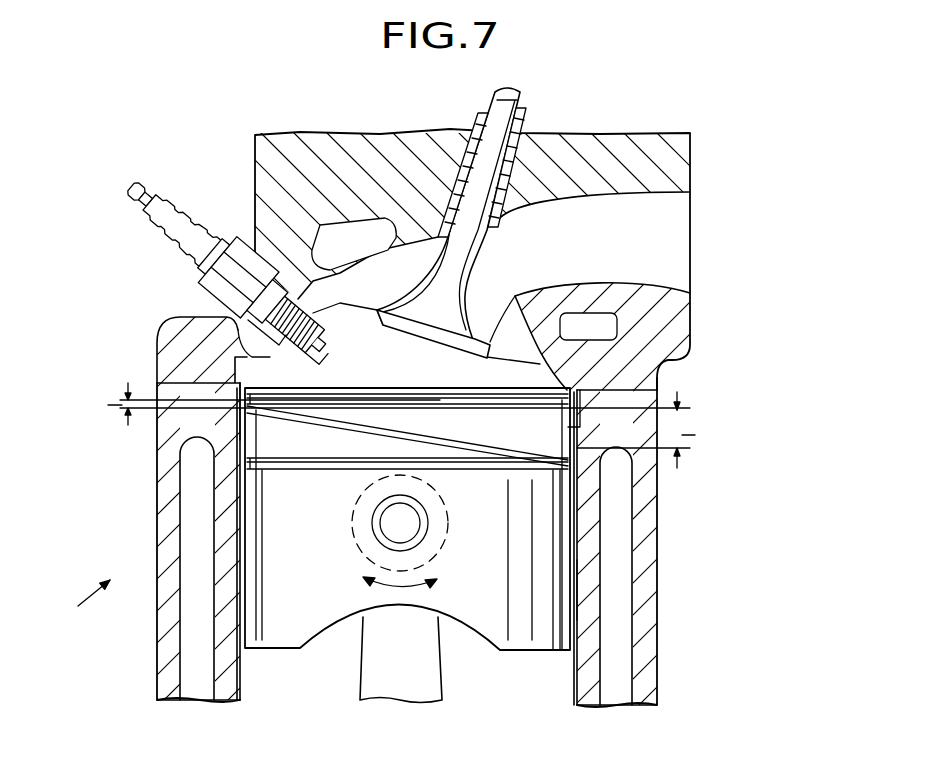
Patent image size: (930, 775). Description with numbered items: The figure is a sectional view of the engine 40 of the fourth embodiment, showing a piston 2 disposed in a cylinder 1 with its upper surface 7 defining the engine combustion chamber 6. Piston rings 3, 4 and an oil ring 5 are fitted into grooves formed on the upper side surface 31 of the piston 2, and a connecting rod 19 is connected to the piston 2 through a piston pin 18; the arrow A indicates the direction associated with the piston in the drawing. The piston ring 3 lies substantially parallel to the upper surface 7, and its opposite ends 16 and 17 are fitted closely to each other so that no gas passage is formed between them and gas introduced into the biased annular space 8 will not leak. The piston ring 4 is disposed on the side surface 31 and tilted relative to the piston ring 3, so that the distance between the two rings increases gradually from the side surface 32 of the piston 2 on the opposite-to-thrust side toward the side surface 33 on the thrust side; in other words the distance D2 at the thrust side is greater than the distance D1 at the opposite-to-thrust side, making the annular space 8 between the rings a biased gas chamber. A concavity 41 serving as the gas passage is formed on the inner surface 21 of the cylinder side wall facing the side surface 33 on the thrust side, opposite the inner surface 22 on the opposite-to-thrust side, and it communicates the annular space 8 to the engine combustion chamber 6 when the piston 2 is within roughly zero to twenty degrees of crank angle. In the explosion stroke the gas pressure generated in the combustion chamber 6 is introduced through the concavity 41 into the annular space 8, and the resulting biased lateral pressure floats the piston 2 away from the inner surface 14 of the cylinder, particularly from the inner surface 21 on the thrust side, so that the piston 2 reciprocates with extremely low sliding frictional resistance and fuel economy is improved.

The cylinder 1 is at (160, 605).
The piston 2 is at (238, 522).
The piston ring 3 is at (177, 337).
The piston ring 4 is at (175, 430).
The oil ring 5 is at (240, 478).
The engine combustion chamber 6 is at (512, 360).
The upper surface 7 is at (353, 390).
The annular space 8 is at (665, 398).
The inner surface of the cylinder 14 is at (577, 690).
The end of the piston ring 16 is at (412, 398).
The end of the piston ring 17 is at (410, 392).
The piston pin 18 is at (385, 522).
The connecting rod 19 is at (440, 692).
The inner surface of the side wall of the cylinder on the thrust side 21 is at (575, 656).
The inner surface of the side wall of the cylinder on the opposite-to-thrust side 22 is at (245, 663).
The side surface of the piston 31 is at (550, 520).
The side surface of the piston on the opposite-to-thrust side 32 is at (245, 572).
The side surface of the piston on the thrust side 33 is at (578, 588).
The engine 40 is at (76, 607).
The concavity 41 is at (662, 368).
The piston rocking direction A is at (398, 588).
The distance D1 is at (382, 404).
The distance D2 is at (653, 430).